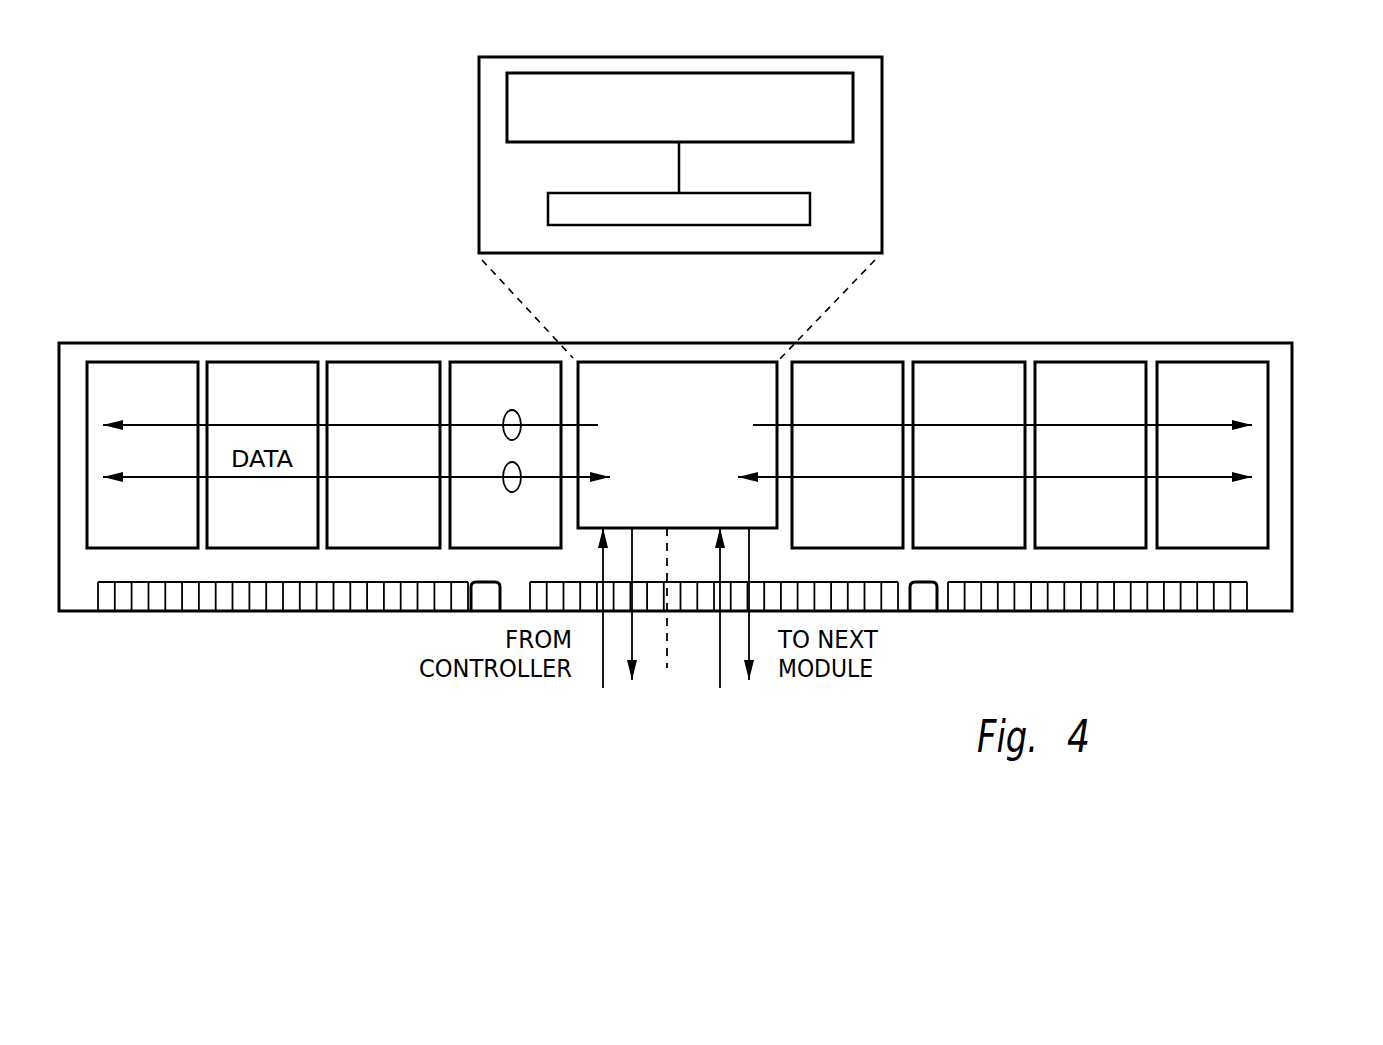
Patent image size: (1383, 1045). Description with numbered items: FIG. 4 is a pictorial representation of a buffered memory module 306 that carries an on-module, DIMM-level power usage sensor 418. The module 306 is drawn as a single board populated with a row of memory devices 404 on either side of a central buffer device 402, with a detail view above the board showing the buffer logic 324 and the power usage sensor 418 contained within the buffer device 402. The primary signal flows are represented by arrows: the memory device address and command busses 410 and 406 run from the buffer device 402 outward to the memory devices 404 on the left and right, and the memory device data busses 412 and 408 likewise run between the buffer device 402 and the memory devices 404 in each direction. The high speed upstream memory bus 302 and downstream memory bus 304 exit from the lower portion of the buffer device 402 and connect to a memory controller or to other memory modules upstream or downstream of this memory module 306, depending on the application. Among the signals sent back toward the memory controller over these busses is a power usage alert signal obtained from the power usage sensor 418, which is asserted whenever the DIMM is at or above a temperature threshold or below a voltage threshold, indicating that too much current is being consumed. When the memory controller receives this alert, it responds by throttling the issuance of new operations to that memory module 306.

The upstream memory bus 302 is at (632, 688).
The downstream memory bus 304 is at (603, 688).
The memory module 306 is at (757, 343).
The buffer logic 324 is at (790, 129).
The buffer device 402 is at (706, 517).
The SDRAM device 404 is at (677, 455).
The memory device address and command bus 406 is at (1150, 425).
The memory device data bus 408 is at (1205, 476).
The memory device address and command bus 410 is at (567, 425).
The memory device data bus 412 is at (178, 477).
The power usage sensor 418 is at (682, 225).